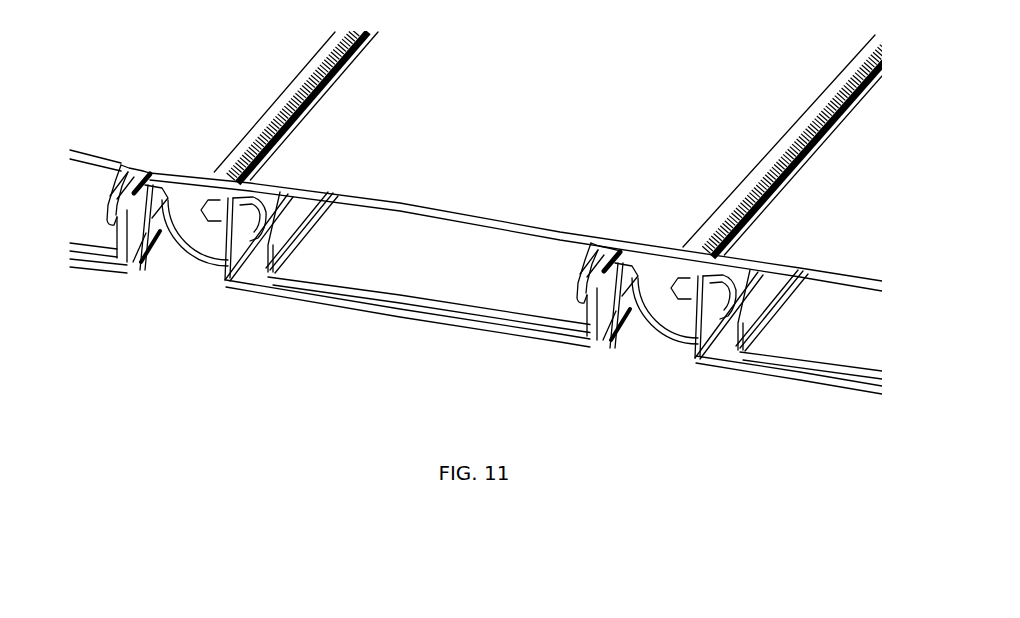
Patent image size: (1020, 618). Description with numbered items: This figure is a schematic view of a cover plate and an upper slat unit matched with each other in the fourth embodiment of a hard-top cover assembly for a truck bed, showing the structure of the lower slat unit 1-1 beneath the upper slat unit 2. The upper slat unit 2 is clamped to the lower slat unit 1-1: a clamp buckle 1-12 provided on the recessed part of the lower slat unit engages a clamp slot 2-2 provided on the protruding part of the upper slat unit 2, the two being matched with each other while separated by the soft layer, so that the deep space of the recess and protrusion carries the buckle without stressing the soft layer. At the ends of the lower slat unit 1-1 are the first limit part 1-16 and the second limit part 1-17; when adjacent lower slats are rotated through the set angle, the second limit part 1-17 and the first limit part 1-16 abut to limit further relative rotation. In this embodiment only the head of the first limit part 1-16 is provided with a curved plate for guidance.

The upper slat unit 2 is at (480, 182).
The lower slat unit 1-1 is at (473, 326).
The second limit part 1-17 is at (168, 195).
The first limit part 1-16 is at (212, 233).
The clamp buckle 1-12 is at (595, 293).
The clamp slot 2-2 is at (618, 318).